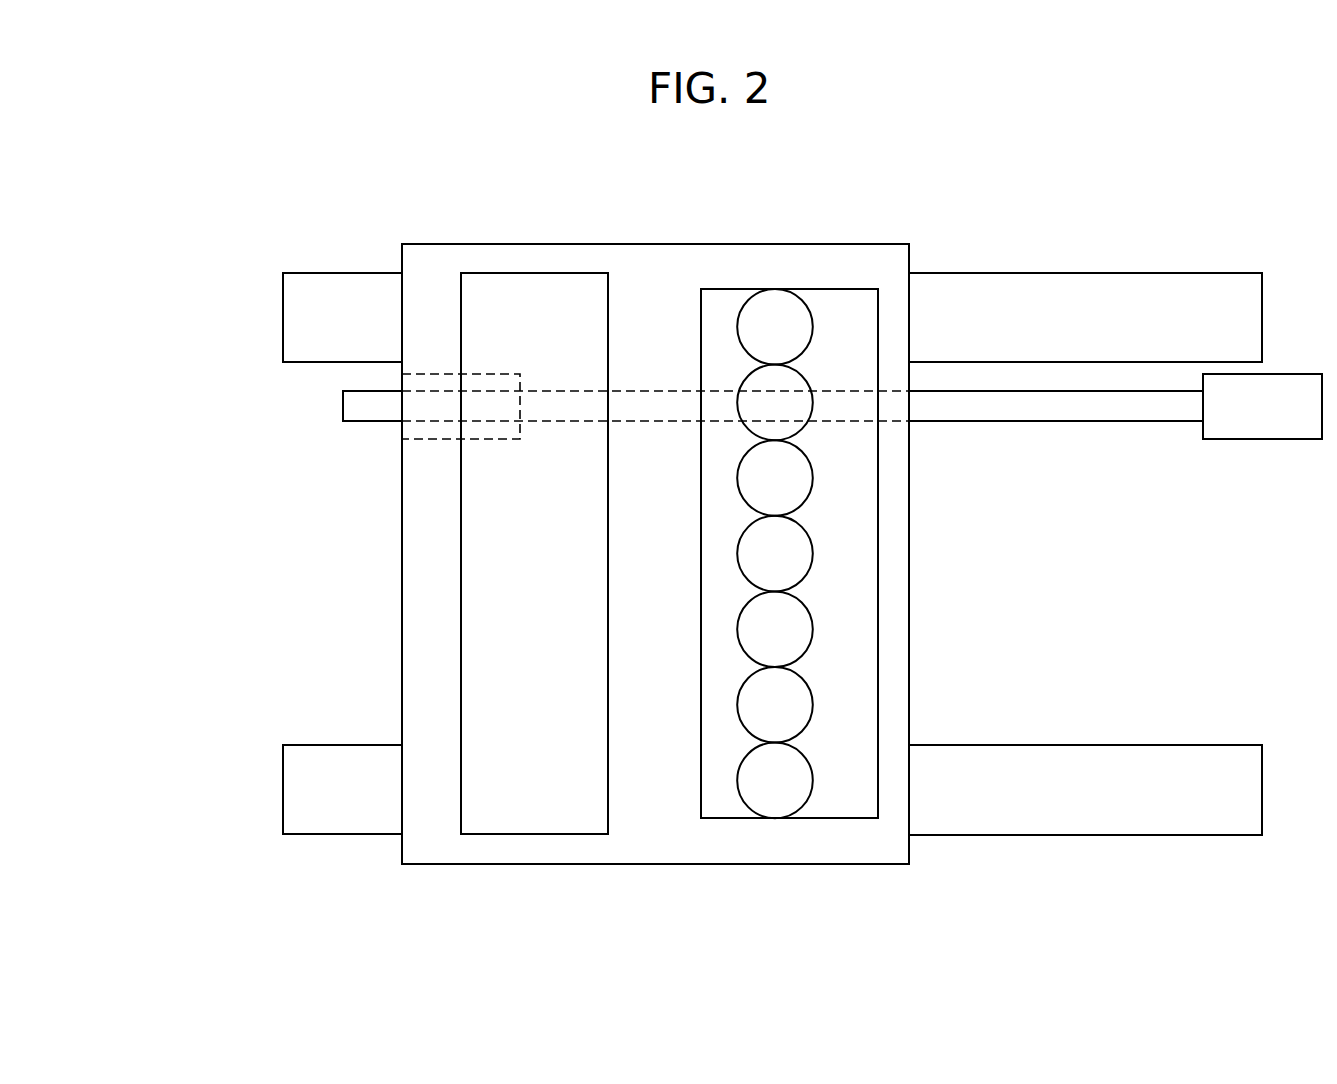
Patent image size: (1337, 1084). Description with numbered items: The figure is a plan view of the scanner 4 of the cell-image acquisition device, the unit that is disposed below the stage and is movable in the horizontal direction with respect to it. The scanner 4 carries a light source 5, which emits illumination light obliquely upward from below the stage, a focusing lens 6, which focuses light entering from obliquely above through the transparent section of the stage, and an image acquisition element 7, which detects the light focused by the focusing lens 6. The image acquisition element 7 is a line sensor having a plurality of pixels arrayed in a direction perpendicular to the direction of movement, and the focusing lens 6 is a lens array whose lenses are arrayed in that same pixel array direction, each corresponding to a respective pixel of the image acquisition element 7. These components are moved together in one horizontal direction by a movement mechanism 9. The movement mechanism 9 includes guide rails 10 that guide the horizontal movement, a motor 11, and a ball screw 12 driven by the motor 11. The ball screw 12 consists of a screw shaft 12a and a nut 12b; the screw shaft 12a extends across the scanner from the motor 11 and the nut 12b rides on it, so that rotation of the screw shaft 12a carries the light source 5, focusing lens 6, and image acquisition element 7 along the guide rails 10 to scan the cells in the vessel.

The scanner 4 is at (235, 163).
The light source 5 is at (526, 834).
The focusing lens 6 is at (739, 795).
The image acquisition element 7 is at (843, 818).
The movement mechanism 9 is at (348, 273).
The guide rails 10 is at (1025, 273).
The motor 11 is at (1258, 439).
The ball screw 12 is at (764, 463).
The screw shaft 12a is at (1107, 421).
The nut 12b is at (435, 442).